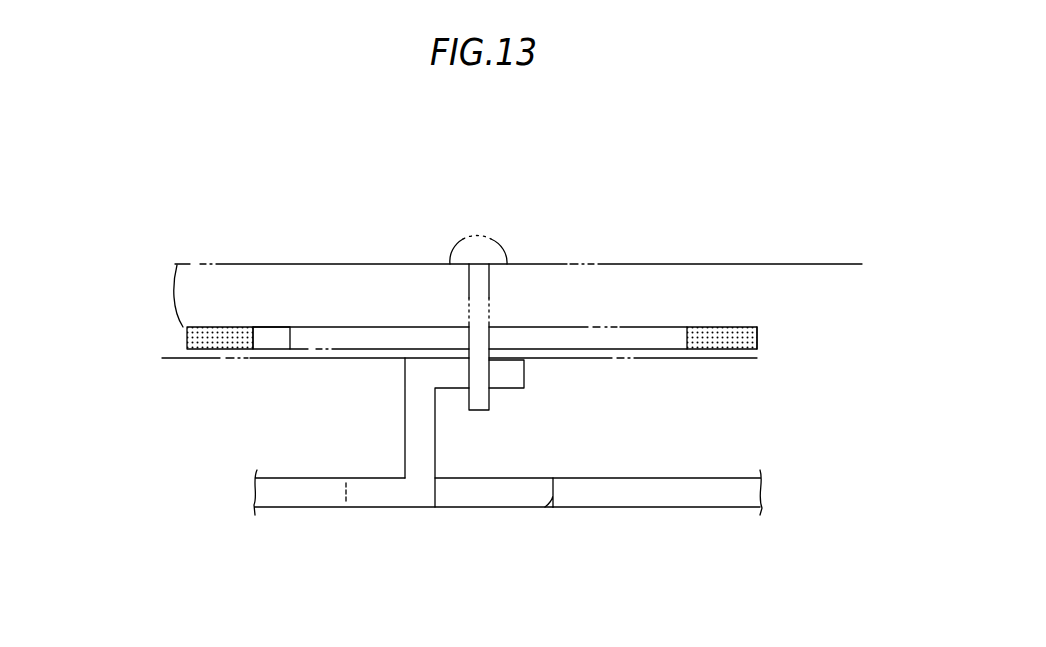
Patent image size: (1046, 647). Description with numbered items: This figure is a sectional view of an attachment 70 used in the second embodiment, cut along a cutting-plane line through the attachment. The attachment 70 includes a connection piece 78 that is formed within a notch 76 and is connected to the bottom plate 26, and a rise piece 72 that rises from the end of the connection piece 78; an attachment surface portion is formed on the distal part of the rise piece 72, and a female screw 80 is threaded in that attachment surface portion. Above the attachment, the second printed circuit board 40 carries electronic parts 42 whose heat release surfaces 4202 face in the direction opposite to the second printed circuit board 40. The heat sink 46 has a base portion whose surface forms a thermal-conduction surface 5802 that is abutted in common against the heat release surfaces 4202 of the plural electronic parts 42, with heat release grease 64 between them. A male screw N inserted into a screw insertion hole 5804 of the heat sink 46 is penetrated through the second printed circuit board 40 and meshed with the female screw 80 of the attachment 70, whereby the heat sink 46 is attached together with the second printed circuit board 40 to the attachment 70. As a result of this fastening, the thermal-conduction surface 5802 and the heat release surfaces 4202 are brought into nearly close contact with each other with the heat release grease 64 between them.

The bottom plate 26 is at (700, 477).
The second printed circuit board 40 is at (290, 328).
The electronic part 42 is at (213, 328).
The heat release surface 4202 is at (242, 327).
The heat sink 46 is at (308, 264).
The thermal-conduction surface 5802 is at (222, 349).
The screw insertion hole 5804 is at (482, 291).
The heat release grease 64 is at (185, 326).
The attachment 70 is at (532, 192).
The rise piece 72 is at (405, 414).
The notch 76 is at (542, 508).
The connection piece 78 is at (372, 508).
The female screw 80 is at (483, 364).
The male screw N is at (463, 237).